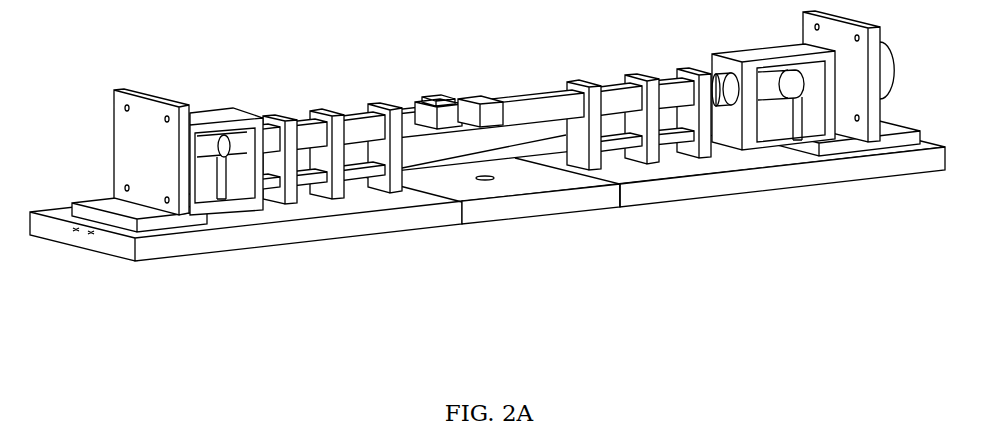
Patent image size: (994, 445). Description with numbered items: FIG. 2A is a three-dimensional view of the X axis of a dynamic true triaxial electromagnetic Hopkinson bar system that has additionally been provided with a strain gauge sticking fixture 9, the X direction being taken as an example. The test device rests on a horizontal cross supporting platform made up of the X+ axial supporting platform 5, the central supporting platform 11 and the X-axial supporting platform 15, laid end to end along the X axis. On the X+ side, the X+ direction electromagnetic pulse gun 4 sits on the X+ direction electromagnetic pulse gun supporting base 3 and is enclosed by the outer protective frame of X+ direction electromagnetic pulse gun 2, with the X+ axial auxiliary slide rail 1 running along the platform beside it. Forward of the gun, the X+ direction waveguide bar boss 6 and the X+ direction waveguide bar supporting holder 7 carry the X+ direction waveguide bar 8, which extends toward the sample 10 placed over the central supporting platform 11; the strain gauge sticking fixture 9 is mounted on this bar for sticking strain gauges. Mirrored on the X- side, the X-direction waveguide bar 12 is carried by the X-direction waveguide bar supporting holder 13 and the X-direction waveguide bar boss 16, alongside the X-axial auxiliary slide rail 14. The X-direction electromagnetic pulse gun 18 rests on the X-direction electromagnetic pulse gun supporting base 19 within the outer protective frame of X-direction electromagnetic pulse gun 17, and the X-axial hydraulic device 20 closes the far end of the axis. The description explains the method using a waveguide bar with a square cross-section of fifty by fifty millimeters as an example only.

The X+ axial auxiliary slide rail 1 is at (78, 234).
The outer protective frame of X+ direction electromagnetic pulse gun 2 is at (177, 206).
The X+ direction electromagnetic pulse gun supporting base 3 is at (210, 187).
The X+ direction electromagnetic pulse gun 4 is at (209, 143).
The X+ axial supporting platform 5 is at (279, 231).
The X+ direction waveguide bar boss 6 is at (272, 123).
The X+ direction waveguide bar supporting holder 7 is at (339, 187).
The X+ direction waveguide bar 8 is at (363, 132).
The strain gauge sticking fixture 9 is at (452, 100).
The sample 10 is at (497, 115).
The central supporting platform 11 is at (530, 213).
The X-direction waveguide bar 12 is at (543, 100).
The X-direction waveguide bar supporting holder 13 is at (596, 110).
The X-axial auxiliary slide rail 14 is at (627, 200).
The X-axial supporting platform 15 is at (688, 182).
The X-direction waveguide bar boss 16 is at (721, 85).
The outer protective frame of X-direction electromagnetic pulse gun 17 is at (757, 146).
The X-direction electromagnetic pulse gun 18 is at (776, 133).
The X-direction electromagnetic pulse gun supporting base 19 is at (797, 126).
The X-axial hydraulic device 20 is at (880, 143).